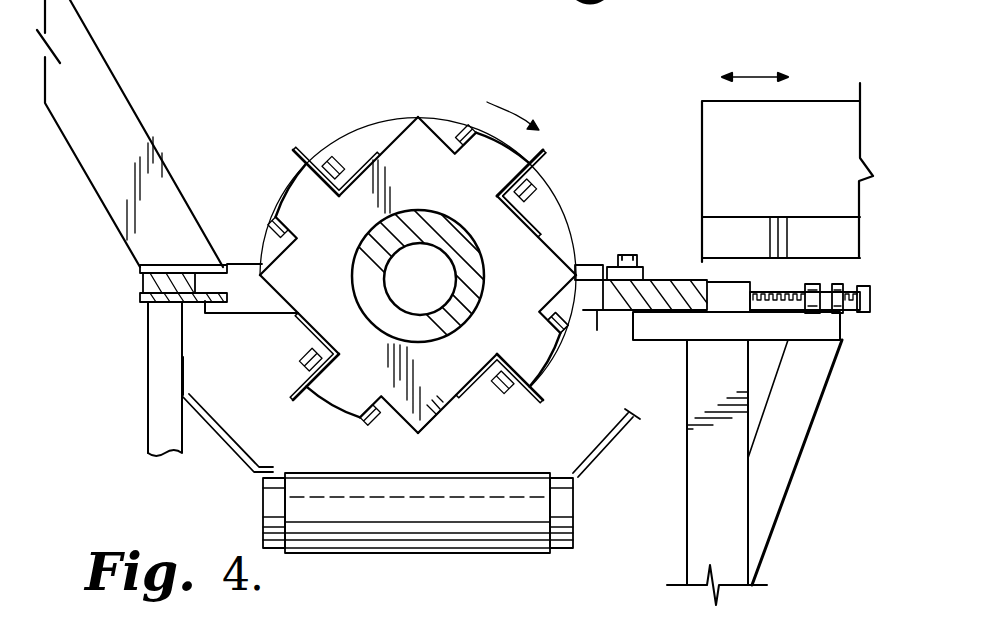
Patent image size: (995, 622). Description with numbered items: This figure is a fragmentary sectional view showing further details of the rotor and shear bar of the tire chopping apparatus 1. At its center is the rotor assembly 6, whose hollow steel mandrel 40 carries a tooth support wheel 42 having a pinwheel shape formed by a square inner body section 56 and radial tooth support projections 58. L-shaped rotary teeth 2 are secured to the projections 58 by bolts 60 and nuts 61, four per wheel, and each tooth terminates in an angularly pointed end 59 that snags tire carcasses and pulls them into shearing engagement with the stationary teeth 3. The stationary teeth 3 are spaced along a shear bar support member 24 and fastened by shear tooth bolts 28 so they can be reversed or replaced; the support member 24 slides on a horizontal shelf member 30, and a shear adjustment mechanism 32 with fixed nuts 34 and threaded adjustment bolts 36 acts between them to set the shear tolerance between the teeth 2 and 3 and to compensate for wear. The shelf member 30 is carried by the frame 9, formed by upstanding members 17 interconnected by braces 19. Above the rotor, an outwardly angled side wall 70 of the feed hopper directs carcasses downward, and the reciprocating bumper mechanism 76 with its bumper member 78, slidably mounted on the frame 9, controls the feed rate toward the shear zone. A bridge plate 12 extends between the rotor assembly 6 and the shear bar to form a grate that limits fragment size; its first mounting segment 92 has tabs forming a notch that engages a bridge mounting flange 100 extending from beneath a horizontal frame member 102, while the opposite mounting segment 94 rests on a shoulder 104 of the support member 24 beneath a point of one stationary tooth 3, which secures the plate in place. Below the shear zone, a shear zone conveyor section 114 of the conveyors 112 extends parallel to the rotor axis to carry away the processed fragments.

The tire chopping apparatus 1 is at (216, 92).
The rotary teeth 2 is at (300, 148).
The stationary teeth 3 is at (583, 263).
The rotor assembly 6 is at (417, 110).
The frame 9 is at (138, 390).
The bridge plates 12 is at (552, 197).
The upstanding members 17 is at (157, 430).
The braces 19 is at (773, 476).
The shear bar support member 24 is at (687, 278).
The shear tooth bolts 28 is at (627, 254).
The horizontal shelf member 30 is at (703, 332).
The shear adjustment mechanism 32 is at (763, 274).
The fixed nuts 34 is at (836, 284).
The adjustment bolts 36 is at (808, 284).
The mandrel 40 is at (355, 262).
The tooth support wheels 42 is at (443, 425).
The square inner body section 56 is at (305, 313).
The radial tooth support projections 58 is at (333, 396).
The pointed ends 59 is at (550, 153).
The bolts 60 is at (338, 158).
The nuts 61 is at (270, 228).
The side walls 70 is at (82, 130).
The reciprocating bumper mechanism 76 is at (820, 112).
The bumper member 78 is at (702, 120).
The first mounting segment 92 is at (240, 266).
The second mounting segment 94 is at (597, 314).
The bridge mounting flange 100 is at (148, 308).
The horizontal frame member 102 is at (143, 283).
The shoulder 104 is at (565, 305).
The conveyors 112 is at (253, 523).
The shear zone conveyor section 114 is at (545, 513).